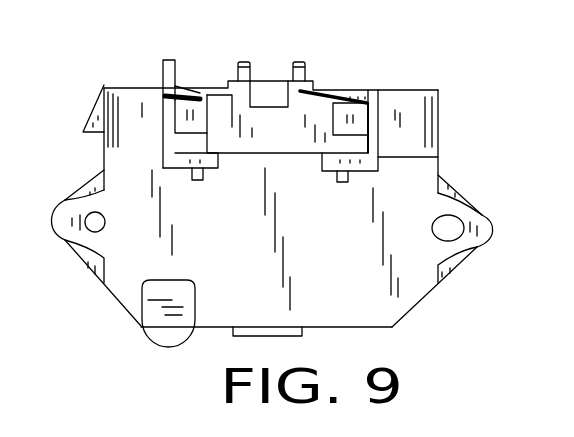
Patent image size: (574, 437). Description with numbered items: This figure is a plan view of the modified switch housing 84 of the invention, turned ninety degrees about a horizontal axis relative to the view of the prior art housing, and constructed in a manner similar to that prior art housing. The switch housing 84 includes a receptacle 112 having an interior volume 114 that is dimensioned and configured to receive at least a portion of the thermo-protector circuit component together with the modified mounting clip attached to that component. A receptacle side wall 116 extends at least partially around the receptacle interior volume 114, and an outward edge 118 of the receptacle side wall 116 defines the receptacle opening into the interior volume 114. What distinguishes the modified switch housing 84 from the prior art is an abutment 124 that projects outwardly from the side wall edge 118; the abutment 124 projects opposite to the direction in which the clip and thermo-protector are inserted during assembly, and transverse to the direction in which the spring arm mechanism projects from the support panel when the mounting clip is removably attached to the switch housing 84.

The modified switch housing 84 is at (410, 198).
The receptacle 112 is at (383, 117).
The receptacle interior volume 114 is at (345, 148).
The receptacle side wall 116 is at (160, 133).
The outward edge 118 is at (170, 143).
The abutment 124 is at (194, 92).